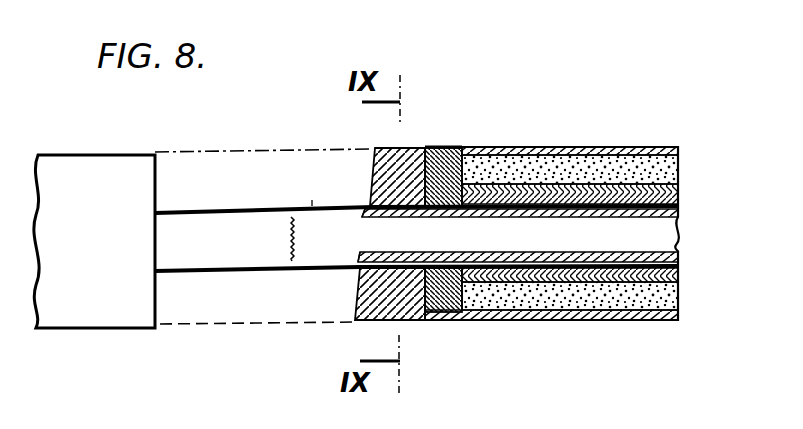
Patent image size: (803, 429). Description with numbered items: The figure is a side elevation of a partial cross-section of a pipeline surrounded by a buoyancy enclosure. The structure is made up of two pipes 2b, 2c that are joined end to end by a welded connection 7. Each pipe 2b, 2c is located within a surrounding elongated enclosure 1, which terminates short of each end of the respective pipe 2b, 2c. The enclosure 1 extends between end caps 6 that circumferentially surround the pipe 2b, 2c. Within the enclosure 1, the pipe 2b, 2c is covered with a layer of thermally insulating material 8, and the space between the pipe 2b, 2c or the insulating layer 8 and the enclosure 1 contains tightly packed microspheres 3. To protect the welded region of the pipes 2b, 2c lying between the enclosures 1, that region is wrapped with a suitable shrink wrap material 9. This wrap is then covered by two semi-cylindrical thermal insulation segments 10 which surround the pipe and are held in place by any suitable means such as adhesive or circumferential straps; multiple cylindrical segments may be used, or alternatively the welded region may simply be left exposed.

The enclosure 1 is at (76, 152).
The pipe 2b is at (190, 224).
The pipe 2c is at (310, 200).
The microspheres 3 is at (600, 320).
The end cap 6 is at (462, 148).
The welded connection 7 is at (291, 224).
The thermally insulating material 8 is at (520, 321).
The shrink wrap material 9 is at (190, 271).
The thermal insulation segment 10 is at (388, 146).